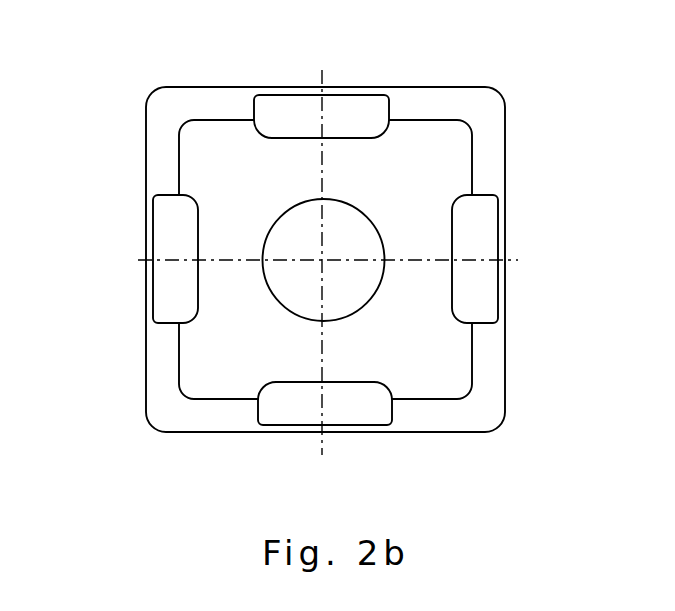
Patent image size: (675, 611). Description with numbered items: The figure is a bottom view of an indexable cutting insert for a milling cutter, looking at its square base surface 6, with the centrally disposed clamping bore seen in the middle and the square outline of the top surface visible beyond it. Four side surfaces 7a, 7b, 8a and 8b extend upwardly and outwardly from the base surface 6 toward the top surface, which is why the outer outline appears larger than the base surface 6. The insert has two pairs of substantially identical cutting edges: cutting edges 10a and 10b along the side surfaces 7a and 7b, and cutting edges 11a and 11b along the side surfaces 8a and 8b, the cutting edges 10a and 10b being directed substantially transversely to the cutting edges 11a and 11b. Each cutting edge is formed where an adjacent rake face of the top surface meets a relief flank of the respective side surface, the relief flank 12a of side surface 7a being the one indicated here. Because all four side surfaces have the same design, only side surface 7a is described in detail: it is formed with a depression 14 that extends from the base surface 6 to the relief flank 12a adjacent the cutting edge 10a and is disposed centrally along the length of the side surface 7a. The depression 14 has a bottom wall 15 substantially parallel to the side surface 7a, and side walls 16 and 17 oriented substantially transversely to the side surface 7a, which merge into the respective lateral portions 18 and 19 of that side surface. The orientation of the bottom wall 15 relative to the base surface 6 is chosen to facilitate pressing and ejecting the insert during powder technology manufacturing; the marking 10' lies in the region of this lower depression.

The base surface 6 is at (322, 253).
The side surface 7a is at (230, 413).
The side surface 7b is at (217, 108).
The side surface 8a is at (163, 358).
The side surface 8b is at (490, 359).
The cutting edge 10a is at (427, 432).
The cutting edge 10b is at (293, 87).
The lower projection 10' is at (288, 373).
The cutting edge 11a is at (147, 251).
The cutting edge 11b is at (505, 221).
The relief flank 12a is at (293, 425).
The depression 14 is at (352, 112).
The bottom wall 15 is at (363, 378).
The side wall 16 is at (263, 407).
The side wall 17 is at (383, 408).
The lateral portion 18 is at (207, 413).
The lateral portion 19 is at (463, 410).